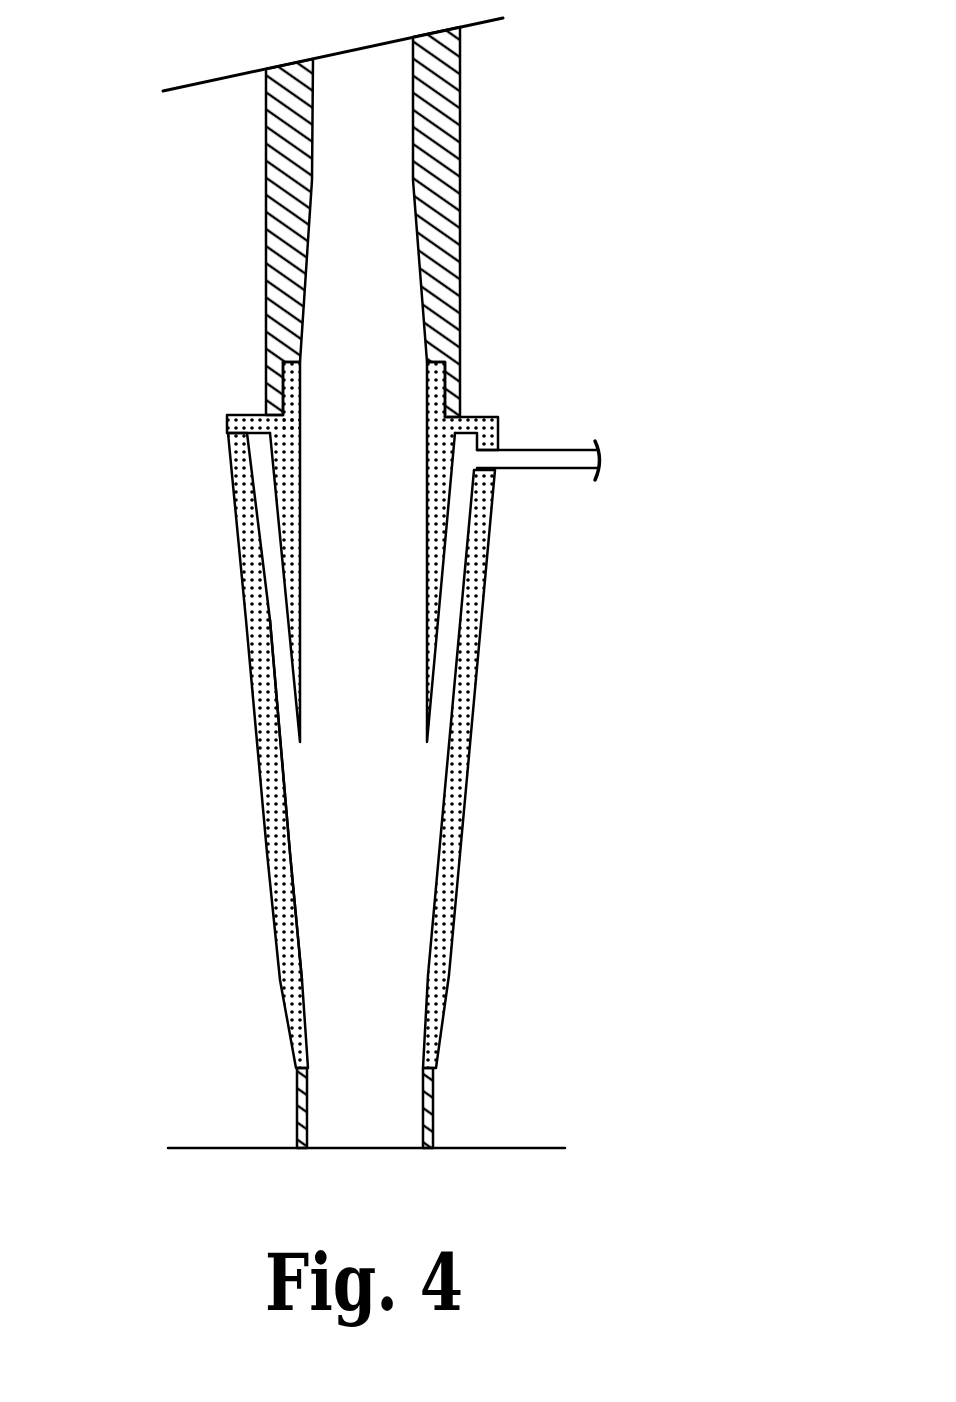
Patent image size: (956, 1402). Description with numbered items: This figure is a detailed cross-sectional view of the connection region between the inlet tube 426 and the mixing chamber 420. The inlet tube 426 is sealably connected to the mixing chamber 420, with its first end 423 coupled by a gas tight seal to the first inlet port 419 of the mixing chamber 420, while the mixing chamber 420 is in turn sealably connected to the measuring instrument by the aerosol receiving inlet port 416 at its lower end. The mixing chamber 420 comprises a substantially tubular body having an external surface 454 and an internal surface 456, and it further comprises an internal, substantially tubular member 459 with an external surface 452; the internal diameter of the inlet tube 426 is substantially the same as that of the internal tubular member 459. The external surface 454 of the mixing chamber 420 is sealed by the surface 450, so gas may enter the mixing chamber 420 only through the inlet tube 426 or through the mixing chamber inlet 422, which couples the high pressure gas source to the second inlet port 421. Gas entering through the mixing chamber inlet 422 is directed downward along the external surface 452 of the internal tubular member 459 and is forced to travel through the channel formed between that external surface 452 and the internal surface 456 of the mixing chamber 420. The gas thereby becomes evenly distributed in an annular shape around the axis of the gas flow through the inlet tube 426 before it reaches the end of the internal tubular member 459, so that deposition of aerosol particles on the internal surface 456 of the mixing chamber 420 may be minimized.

The inlet tube 426 is at (238, 256).
The first end of inlet tube 423 is at (469, 314).
The first inlet port 419 is at (250, 395).
The sealing surface 450 is at (498, 389).
The external surface of internal tubular member 452 is at (250, 499).
The internal tubular member 459 is at (302, 690).
The external surface of mixing chamber 454 is at (225, 703).
The mixing chamber 420 is at (479, 921).
The internal surface of mixing chamber 456 is at (315, 824).
The second inlet port 421 is at (510, 495).
The mixing chamber inlet 422 is at (587, 422).
The aerosol receiving inlet port 416 is at (423, 1125).